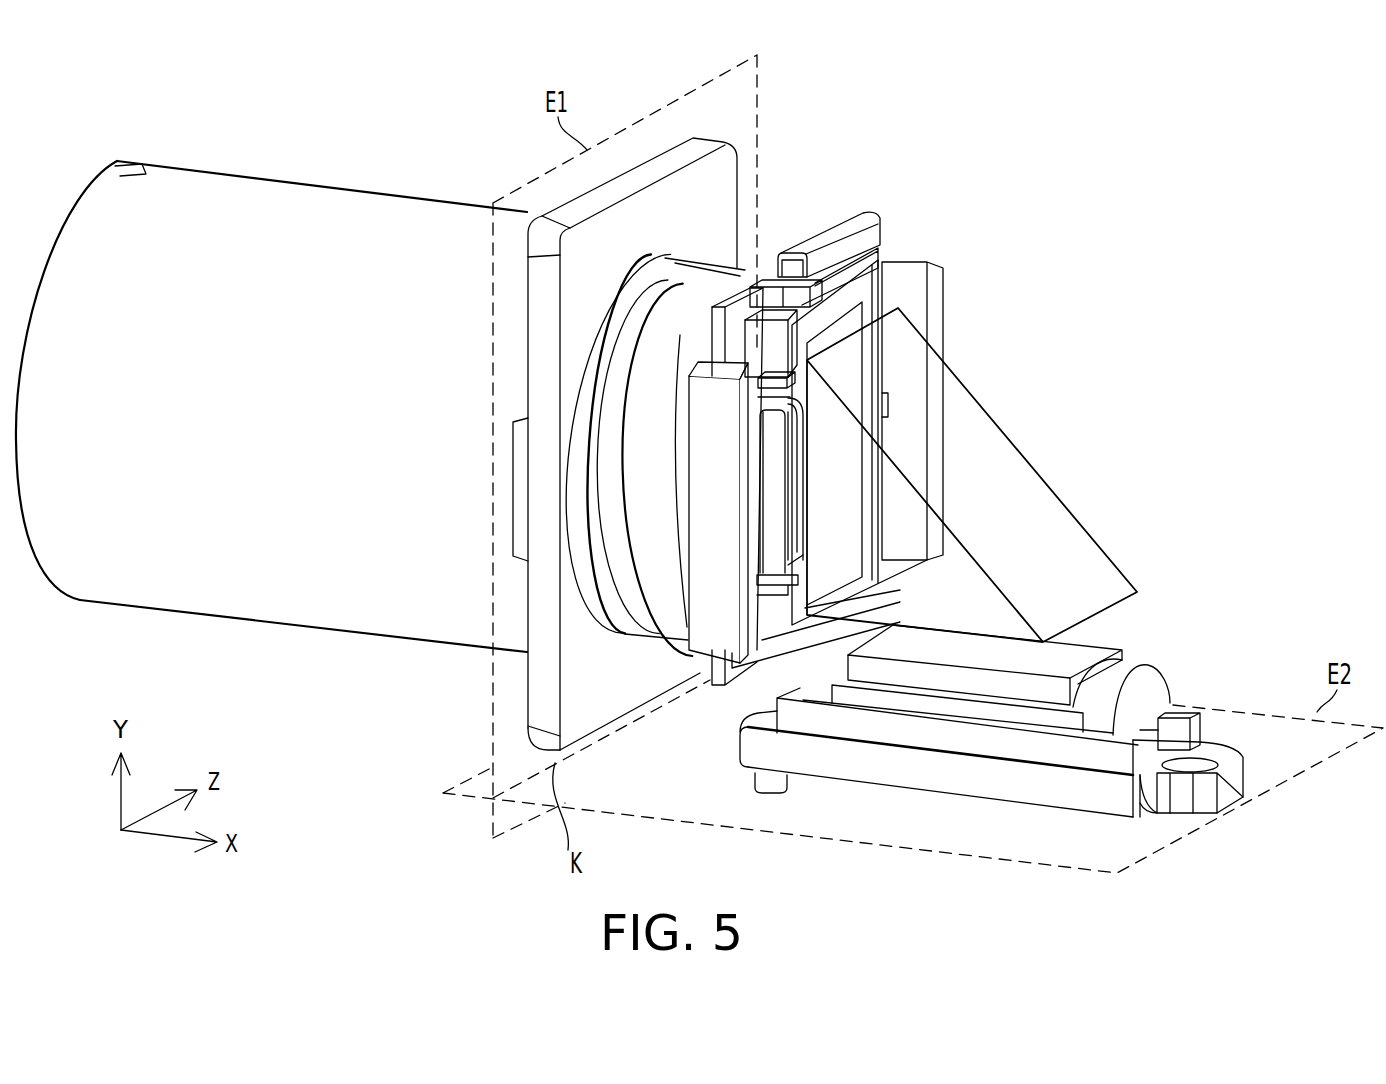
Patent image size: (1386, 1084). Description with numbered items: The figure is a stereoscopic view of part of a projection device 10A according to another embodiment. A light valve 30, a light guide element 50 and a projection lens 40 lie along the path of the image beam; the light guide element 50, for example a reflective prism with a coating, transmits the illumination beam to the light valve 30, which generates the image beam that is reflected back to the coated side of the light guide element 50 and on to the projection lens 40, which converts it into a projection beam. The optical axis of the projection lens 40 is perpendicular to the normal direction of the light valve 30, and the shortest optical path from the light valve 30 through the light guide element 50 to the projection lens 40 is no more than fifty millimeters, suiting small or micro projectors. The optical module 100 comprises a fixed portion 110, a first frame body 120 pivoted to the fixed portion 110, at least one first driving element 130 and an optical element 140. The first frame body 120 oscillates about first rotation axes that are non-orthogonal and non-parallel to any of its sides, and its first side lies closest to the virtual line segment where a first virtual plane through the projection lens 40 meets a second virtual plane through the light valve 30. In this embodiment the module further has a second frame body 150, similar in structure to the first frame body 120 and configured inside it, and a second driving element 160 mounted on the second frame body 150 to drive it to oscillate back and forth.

The projection device 10A is at (1160, 259).
The light valve 30 is at (1237, 787).
The projection lens 40 is at (357, 200).
The light guide element 50 is at (987, 410).
The optical module 100 is at (1282, 325).
The fixed portion 110 is at (707, 635).
The first frame body 120 is at (763, 276).
The first driving element 130 is at (872, 262).
The optical element 140 is at (833, 332).
The second frame body 150 is at (797, 620).
The second driving element 160 is at (762, 552).